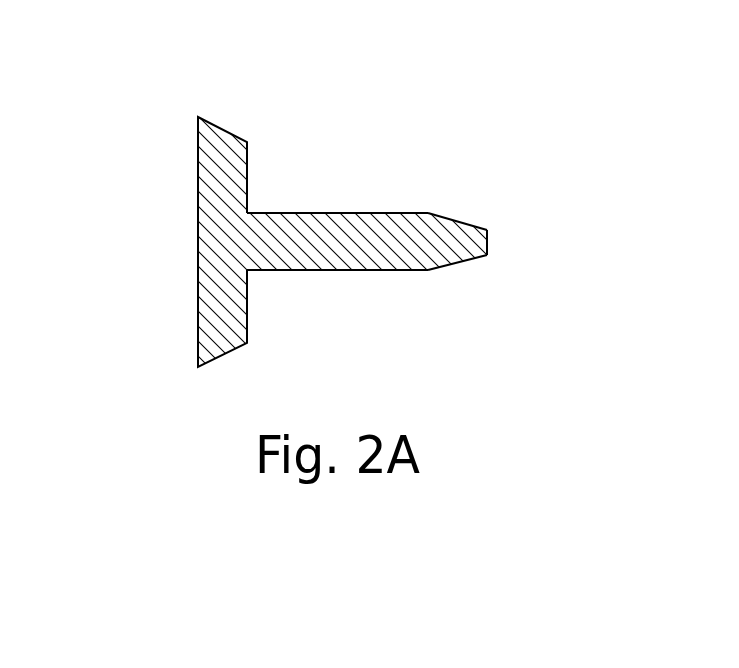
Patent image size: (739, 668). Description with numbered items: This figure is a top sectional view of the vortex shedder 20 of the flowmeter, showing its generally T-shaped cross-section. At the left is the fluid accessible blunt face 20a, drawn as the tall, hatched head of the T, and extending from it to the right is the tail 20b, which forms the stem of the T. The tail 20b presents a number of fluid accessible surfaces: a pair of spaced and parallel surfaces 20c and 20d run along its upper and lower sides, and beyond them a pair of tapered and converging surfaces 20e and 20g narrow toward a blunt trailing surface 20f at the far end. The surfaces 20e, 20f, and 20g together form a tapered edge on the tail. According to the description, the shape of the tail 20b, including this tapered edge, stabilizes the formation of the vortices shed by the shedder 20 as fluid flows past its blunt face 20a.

The shedder 20 is at (369, 204).
The blunt face 20a is at (198, 212).
The tail 20b is at (342, 254).
The parallel surface 20c is at (364, 212).
The parallel surface 20d is at (322, 271).
The tapered converging surface 20e is at (470, 222).
The blunt trailing surface 20f is at (489, 243).
The tapered converging surface 20g is at (465, 262).